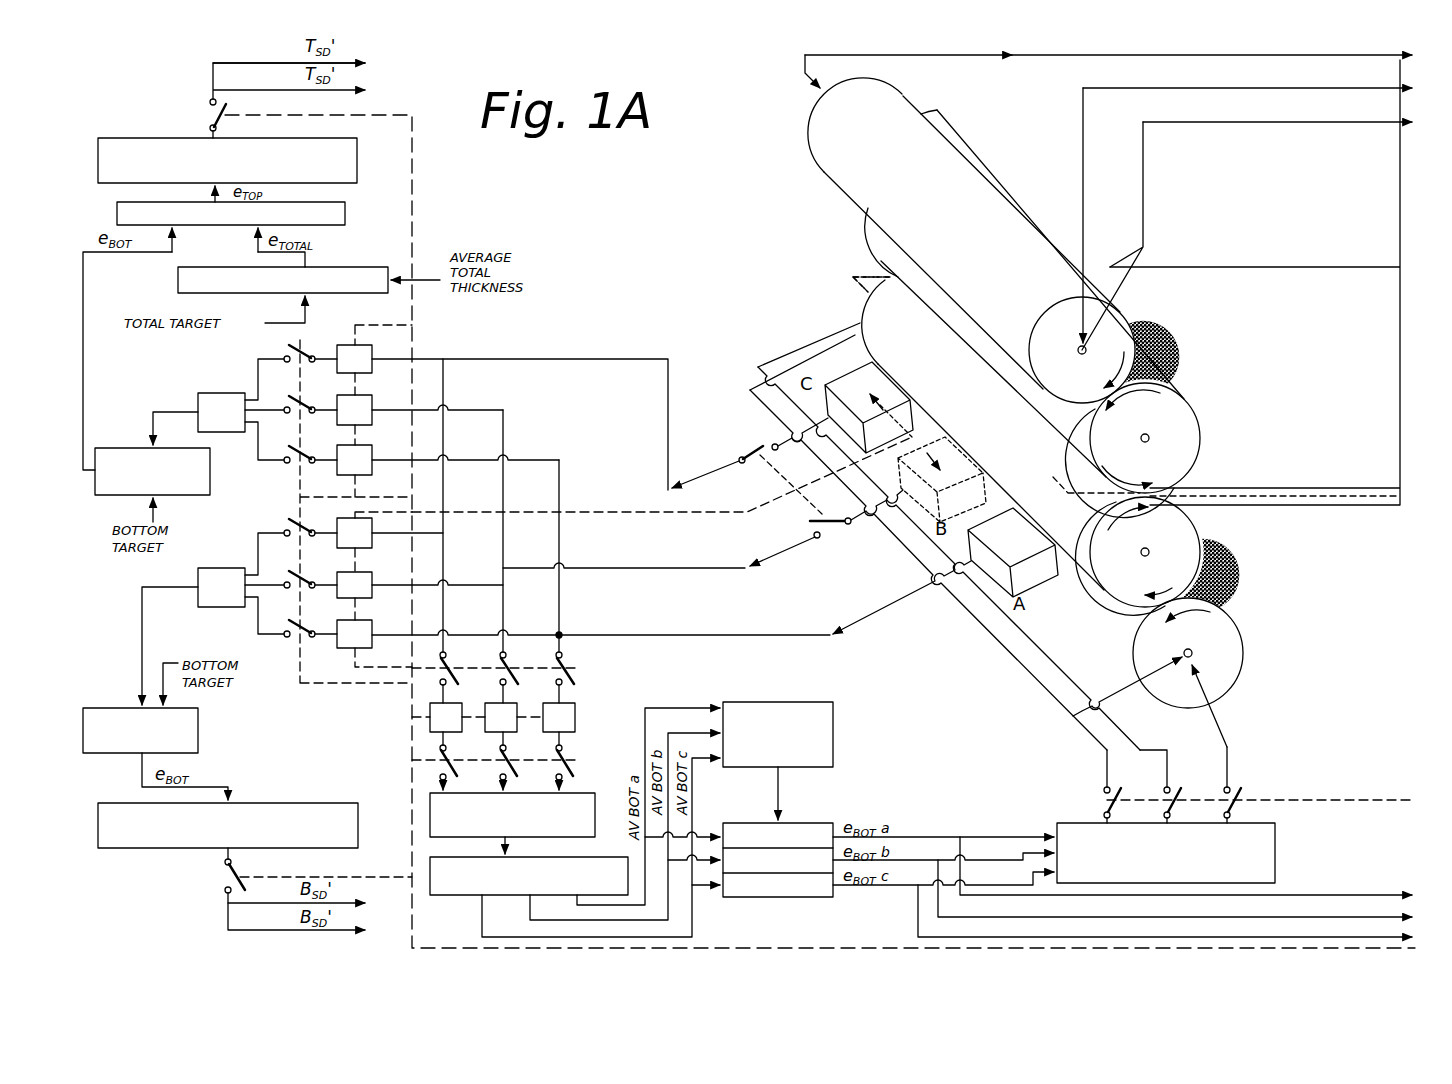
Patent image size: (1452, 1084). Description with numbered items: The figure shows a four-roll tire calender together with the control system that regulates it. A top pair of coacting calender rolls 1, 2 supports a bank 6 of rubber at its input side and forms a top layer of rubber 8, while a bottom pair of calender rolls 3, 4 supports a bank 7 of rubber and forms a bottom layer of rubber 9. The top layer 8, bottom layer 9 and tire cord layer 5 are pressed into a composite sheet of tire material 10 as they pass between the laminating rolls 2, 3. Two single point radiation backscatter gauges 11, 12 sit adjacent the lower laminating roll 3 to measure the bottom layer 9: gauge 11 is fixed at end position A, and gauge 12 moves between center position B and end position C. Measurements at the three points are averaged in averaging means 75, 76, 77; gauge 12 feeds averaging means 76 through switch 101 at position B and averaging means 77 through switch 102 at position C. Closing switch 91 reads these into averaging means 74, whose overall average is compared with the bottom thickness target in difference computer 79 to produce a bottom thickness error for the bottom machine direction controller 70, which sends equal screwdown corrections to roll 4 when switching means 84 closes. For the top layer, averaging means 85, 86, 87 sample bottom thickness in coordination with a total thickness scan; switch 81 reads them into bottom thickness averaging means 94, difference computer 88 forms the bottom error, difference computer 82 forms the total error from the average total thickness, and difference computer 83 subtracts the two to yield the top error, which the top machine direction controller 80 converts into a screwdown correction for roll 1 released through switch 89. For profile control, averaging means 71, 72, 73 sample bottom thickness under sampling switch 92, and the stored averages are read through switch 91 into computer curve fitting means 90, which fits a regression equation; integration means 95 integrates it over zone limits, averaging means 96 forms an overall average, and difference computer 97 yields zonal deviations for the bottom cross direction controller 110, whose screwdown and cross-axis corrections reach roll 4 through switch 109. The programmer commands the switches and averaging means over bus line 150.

The top calender roll 1 is at (1052, 348).
The top calender roll 2 is at (1184, 449).
The bottom calender roll 3 is at (1129, 584).
The bottom calender roll 4 is at (1230, 672).
The tire cord layer 5 is at (868, 275).
The bank of rubber 6 is at (1178, 345).
The bank of rubber 7 is at (1240, 578).
The top layer of rubber 8 is at (1090, 445).
The bottom layer of rubber 9 is at (1120, 608).
The composite sheet of tire material 10 is at (1345, 490).
The single point radiation backscatter gauge 11 is at (1040, 520).
The single point radiation backscatter gauge 12 is at (880, 372).
The bottom machine direction controller 70 is at (305, 803).
The averaging means 71 is at (575, 732).
The averaging means 72 is at (517, 732).
The averaging means 73 is at (462, 732).
The averaging means 74 is at (232, 568).
The averaging means 75 is at (337, 625).
The averaging means 76 is at (337, 576).
The averaging means 77 is at (337, 523).
The difference computer 79 is at (108, 708).
The top machine direction controller 80 is at (122, 138).
The switch 81 is at (278, 352).
The difference computer 82 is at (178, 281).
The difference computer 83 is at (117, 212).
The switching means 84 is at (274, 889).
The averaging means 85 is at (337, 450).
The averaging means 86 is at (337, 400).
The averaging means 87 is at (337, 350).
The difference computer 88 is at (118, 448).
The switch 89 is at (274, 100).
The computer curve fitting means 90 is at (580, 793).
The switch 91 is at (280, 522).
The sampling switch 92 is at (580, 665).
The bottom thickness averaging means 94 is at (215, 393).
The integration means 95 is at (462, 895).
The averaging means 96 is at (833, 718).
The difference computer 97 is at (830, 823).
The switch 101 is at (825, 548).
The switch 102 is at (752, 440).
The switch 109 is at (1240, 780).
The bottom cross direction controller 110 is at (1275, 832).
The bus line 150 is at (478, 948).